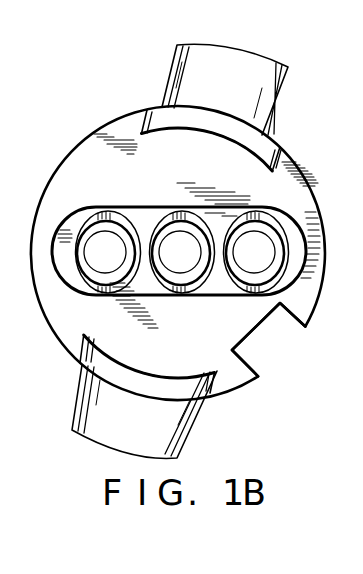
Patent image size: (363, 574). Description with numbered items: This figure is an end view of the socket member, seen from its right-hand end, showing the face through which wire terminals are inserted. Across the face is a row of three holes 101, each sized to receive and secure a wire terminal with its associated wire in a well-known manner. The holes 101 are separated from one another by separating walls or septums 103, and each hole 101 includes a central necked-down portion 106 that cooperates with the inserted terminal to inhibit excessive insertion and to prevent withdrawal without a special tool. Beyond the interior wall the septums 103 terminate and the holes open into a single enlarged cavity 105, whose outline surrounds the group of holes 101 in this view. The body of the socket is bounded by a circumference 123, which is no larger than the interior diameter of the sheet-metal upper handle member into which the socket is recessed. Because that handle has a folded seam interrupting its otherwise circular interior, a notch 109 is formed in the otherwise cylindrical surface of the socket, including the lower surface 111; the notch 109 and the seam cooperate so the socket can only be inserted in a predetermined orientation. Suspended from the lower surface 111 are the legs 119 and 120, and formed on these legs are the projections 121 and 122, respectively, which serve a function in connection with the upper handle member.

The holes 101 is at (267, 265).
The septums 103 is at (168, 180).
The enlarged cavity 105 is at (297, 228).
The central necked-down portion 106 is at (237, 273).
The notch 109 is at (253, 342).
The lower surface 111 is at (116, 179).
The leg 119 is at (253, 144).
The leg 120 is at (143, 373).
The projection 121 is at (238, 90).
The projection 122 is at (150, 431).
The circumference 123 is at (80, 143).